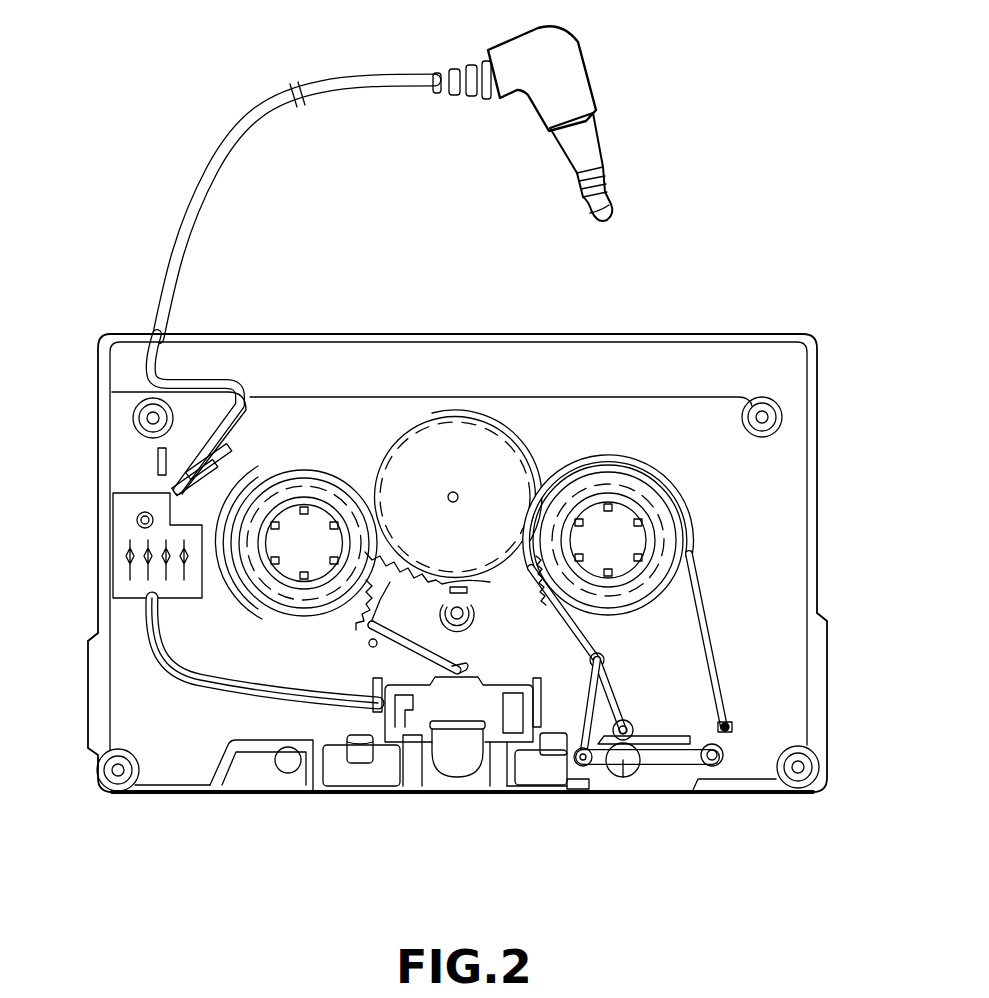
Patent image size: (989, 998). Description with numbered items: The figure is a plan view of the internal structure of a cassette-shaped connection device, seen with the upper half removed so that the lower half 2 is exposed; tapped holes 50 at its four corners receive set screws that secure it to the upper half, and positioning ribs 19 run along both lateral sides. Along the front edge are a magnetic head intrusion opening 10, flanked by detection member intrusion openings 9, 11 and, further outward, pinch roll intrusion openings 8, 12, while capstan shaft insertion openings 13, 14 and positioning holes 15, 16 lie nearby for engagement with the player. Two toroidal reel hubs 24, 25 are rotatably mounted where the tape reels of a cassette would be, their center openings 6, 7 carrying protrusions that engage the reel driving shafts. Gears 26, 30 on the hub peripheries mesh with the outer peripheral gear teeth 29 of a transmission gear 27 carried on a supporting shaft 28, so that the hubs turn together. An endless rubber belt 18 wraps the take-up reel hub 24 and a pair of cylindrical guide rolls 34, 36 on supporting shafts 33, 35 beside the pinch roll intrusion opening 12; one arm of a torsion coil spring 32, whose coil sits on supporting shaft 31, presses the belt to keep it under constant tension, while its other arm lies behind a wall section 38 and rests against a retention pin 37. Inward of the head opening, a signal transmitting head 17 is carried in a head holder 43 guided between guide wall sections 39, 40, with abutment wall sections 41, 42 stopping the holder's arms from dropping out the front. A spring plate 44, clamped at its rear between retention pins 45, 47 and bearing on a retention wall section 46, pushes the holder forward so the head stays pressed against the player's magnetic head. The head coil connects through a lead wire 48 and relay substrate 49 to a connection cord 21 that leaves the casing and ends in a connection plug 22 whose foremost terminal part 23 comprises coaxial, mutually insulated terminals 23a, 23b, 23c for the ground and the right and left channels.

The lower half 2 is at (797, 368).
The center opening 6 is at (642, 540).
The center opening 7 is at (348, 543).
The pinch roll intrusion opening 8 is at (222, 787).
The detection member intrusion opening 9 is at (355, 786).
The magnetic head intrusion opening 10 is at (405, 780).
The detection member intrusion opening 11 is at (536, 794).
The pinch roll intrusion opening 12 is at (615, 783).
The capstan shaft insertion opening 13 is at (295, 768).
The capstan shaft insertion opening 14 is at (633, 770).
The positioning hole 15 is at (345, 740).
The positioning hole 16 is at (550, 745).
The signal transmitting head 17 is at (457, 765).
The endless rubber belt 18 is at (698, 568).
The positioning rib 19 is at (90, 672).
The connection cord 21 is at (353, 76).
The connection plug 22 is at (572, 44).
The foremost terminal part 23 is at (600, 152).
The terminal 23a is at (572, 150).
The terminal 23b is at (580, 184).
The terminal 23c is at (592, 212).
The reel hub 24 is at (648, 506).
The reel hub 25 is at (312, 488).
The gear 26 is at (644, 608).
The transmission gear 27 is at (500, 447).
The supporting shaft 28 is at (458, 497).
The outer peripheral gear teeth 29 is at (475, 577).
The gear 30 is at (272, 610).
The supporting shaft 31 is at (633, 726).
The torsion coil spring 32 is at (610, 694).
The supporting shaft 33 is at (583, 768).
The guide roll 34 is at (585, 790).
The supporting shaft 35 is at (712, 762).
The guide roll 36 is at (722, 750).
The retention pin 37 is at (727, 722).
The wall section 38 is at (660, 746).
The guide wall section 39 is at (372, 688).
The guide wall section 40 is at (540, 680).
The abutment wall section 41 is at (415, 742).
The abutment wall section 42 is at (497, 745).
The head holder 43 is at (498, 684).
The spring plate 44 is at (422, 658).
The retention pin 45 is at (377, 625).
The retention wall section 46 is at (378, 578).
The retention pin 47 is at (370, 645).
The lead wire 48 is at (222, 686).
The relay substrate 49 is at (135, 598).
The tapped hole 50 is at (150, 418).